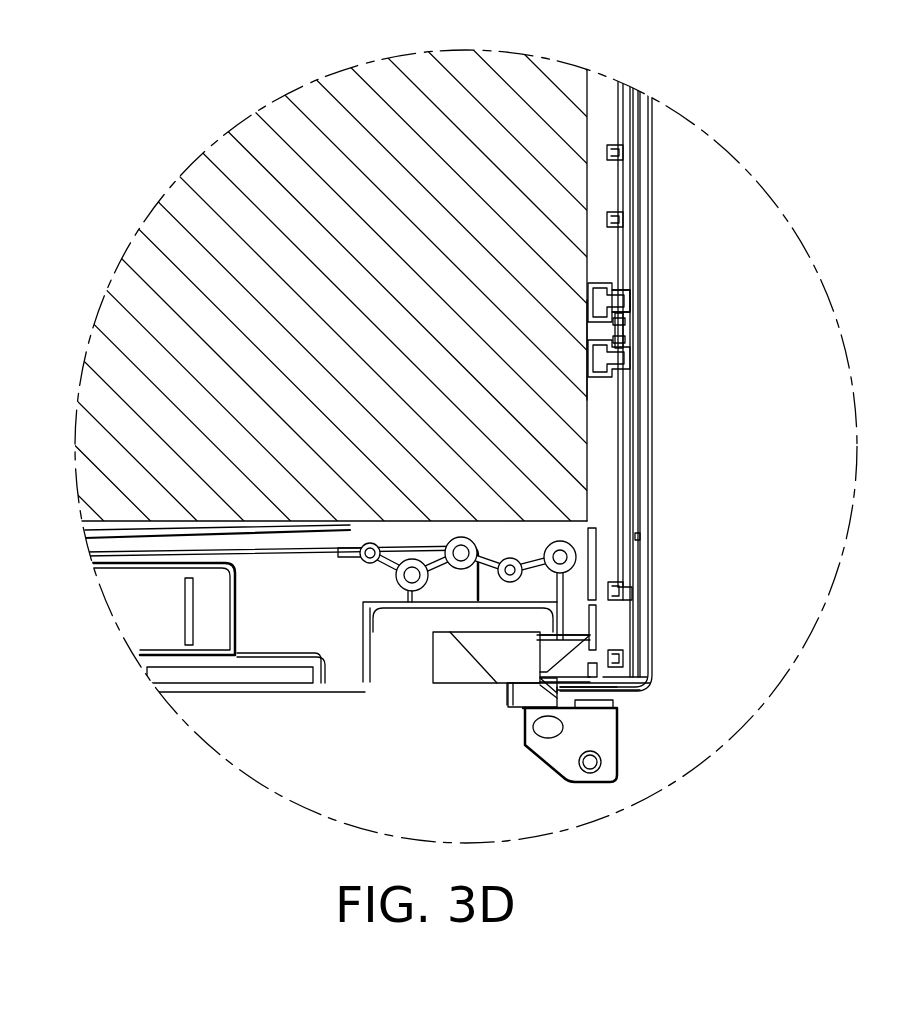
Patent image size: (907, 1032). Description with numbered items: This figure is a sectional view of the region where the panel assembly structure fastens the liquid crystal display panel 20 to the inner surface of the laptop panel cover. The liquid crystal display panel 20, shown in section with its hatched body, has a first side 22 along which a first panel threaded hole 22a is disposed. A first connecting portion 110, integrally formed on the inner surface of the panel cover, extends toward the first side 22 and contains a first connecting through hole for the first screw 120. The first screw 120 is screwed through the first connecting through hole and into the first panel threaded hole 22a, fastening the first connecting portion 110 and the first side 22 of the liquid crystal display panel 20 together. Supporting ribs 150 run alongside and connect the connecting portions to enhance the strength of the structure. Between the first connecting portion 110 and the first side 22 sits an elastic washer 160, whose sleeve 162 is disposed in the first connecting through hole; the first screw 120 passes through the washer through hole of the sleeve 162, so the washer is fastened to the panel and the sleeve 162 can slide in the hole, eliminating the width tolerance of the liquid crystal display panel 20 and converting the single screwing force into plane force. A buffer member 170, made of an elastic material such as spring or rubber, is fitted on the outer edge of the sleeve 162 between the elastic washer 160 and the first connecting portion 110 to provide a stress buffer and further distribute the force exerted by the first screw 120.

The liquid crystal display panel 20 is at (323, 163).
The first side 22 is at (587, 177).
The first panel threaded hole 22a is at (582, 323).
The supporting ribs 150 is at (627, 122).
The elastic washer 160 is at (588, 283).
The buffer member 170 is at (615, 291).
The sleeve 162 is at (617, 327).
The first screw 120 is at (623, 340).
The first connecting portion 110 is at (623, 352).